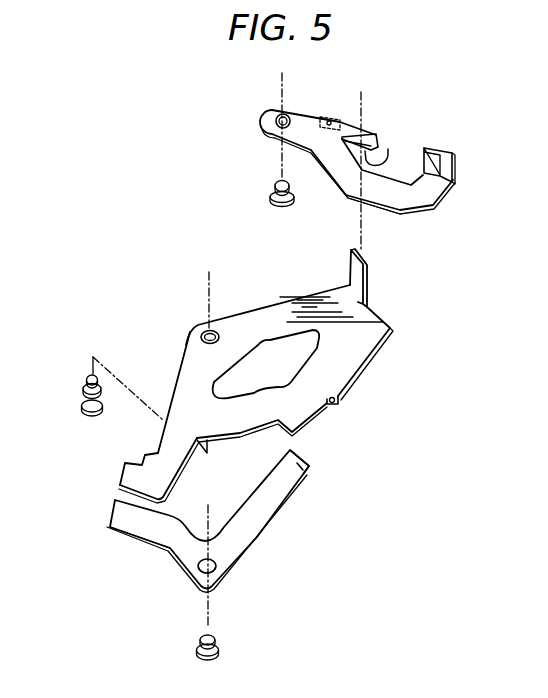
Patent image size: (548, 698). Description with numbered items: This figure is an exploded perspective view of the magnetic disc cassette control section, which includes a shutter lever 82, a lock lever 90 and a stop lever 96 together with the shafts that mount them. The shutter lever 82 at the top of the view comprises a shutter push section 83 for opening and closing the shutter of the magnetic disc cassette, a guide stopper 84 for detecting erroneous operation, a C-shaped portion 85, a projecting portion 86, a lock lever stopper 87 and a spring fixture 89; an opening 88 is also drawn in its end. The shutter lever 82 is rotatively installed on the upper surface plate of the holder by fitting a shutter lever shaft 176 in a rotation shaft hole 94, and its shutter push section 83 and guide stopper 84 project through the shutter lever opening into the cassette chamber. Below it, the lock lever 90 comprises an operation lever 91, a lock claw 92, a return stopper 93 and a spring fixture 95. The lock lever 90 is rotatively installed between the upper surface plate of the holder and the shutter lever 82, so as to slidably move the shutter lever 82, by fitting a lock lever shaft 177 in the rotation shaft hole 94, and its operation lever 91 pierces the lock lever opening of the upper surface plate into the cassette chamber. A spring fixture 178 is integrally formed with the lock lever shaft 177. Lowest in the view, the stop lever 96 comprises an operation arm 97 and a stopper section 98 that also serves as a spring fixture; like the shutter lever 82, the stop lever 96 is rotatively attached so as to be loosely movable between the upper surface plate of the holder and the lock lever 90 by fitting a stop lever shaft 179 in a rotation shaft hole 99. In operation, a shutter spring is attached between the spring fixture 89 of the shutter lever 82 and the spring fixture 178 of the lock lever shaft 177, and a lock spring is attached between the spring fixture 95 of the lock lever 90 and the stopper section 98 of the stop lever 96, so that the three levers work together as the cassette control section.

The shutter lever 82 is at (447, 193).
The shutter push section 83 is at (454, 150).
The guide stopper 84 is at (433, 150).
The C-shaped portion 85 is at (352, 202).
The projecting portion 86 is at (374, 137).
The lock lever stopper 87 is at (384, 150).
The mounting hole 88 is at (285, 115).
The spring fixture 89 is at (332, 114).
The lock lever 90 is at (380, 350).
The operation lever 91 is at (365, 261).
The lock claw 92 is at (147, 455).
The return stopper 93 is at (287, 432).
The rotation shaft hole 94 is at (212, 331).
The spring fixture 95 is at (337, 395).
The stop lever 96 is at (263, 540).
The operation arm 97 is at (124, 533).
The stopper section 98 is at (308, 470).
The rotation shaft hole 99 is at (217, 568).
The shutter lever shaft 176 is at (269, 195).
The lock lever shaft 177 is at (86, 383).
The spring fixture 178 is at (82, 407).
The stop lever shaft 179 is at (220, 648).